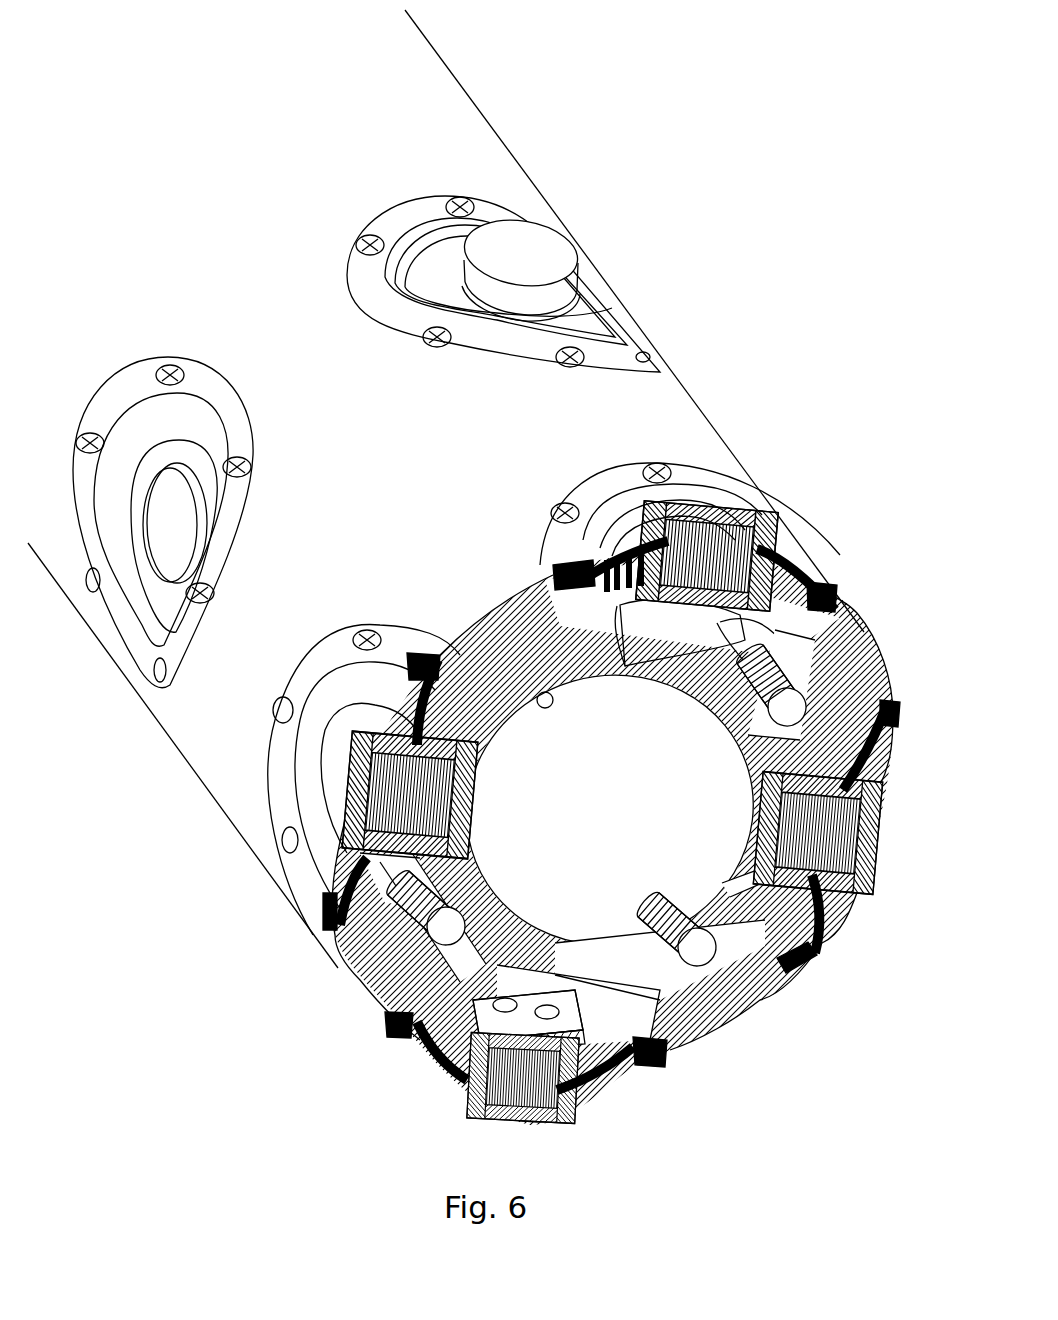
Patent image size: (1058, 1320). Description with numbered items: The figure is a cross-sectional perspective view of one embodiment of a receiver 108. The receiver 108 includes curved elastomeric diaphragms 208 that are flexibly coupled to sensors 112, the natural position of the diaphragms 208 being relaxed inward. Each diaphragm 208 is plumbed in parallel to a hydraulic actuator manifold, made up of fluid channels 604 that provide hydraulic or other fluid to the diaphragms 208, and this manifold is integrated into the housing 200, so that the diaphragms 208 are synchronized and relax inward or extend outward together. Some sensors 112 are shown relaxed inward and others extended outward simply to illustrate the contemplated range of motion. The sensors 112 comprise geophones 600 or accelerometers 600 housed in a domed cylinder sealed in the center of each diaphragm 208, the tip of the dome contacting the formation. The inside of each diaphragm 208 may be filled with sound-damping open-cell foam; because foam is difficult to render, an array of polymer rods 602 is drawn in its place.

The receiver 108 is at (783, 131).
The sensor 112 is at (528, 250).
The housing 200 is at (678, 420).
The curved elastomeric diaphragm 208 is at (585, 318).
The geophone 600 is at (712, 548).
The polymer rod 602 is at (665, 540).
The fluid channel 604 is at (775, 752).